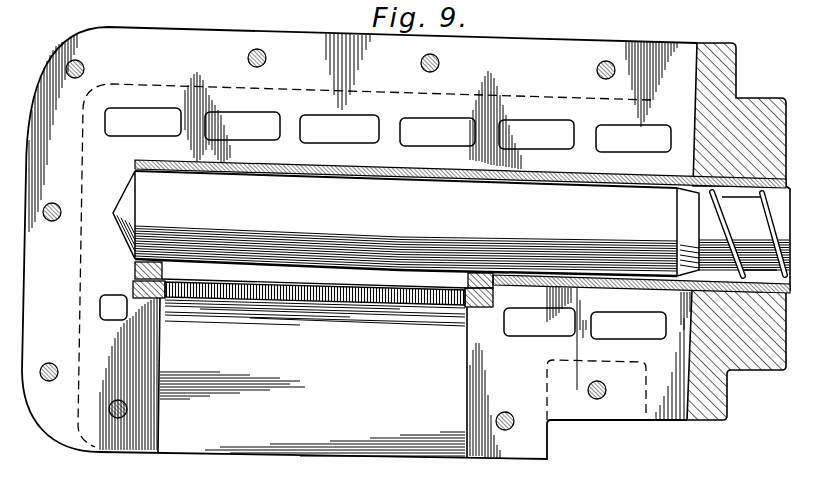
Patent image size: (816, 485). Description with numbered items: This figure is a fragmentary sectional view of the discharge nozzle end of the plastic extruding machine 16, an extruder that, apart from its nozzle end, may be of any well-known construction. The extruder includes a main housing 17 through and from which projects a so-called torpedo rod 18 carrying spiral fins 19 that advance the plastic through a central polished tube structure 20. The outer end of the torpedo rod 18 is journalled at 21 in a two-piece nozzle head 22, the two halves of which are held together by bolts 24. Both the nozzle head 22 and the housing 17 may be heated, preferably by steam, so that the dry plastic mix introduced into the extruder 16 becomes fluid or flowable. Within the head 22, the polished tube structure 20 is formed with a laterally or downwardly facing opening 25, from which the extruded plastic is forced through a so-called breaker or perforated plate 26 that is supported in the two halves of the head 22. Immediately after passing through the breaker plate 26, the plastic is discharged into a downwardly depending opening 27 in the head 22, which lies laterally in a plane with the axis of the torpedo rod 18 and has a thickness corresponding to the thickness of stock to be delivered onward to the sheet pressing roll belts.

The plastic extruding machine 16 is at (544, 30).
The housing 17 is at (722, 88).
The torpedo rod 18 is at (445, 242).
The spiral fins 19 is at (724, 226).
The polished tube structure 20 is at (710, 177).
The journal 21 is at (153, 228).
The two-piece nozzle head 22 is at (65, 423).
The bolts 24 is at (67, 66).
The laterally or downwardly facing opening 25 is at (290, 274).
The breaker or perforated plate 26 is at (340, 304).
The downwardly depending opening 27 is at (279, 428).